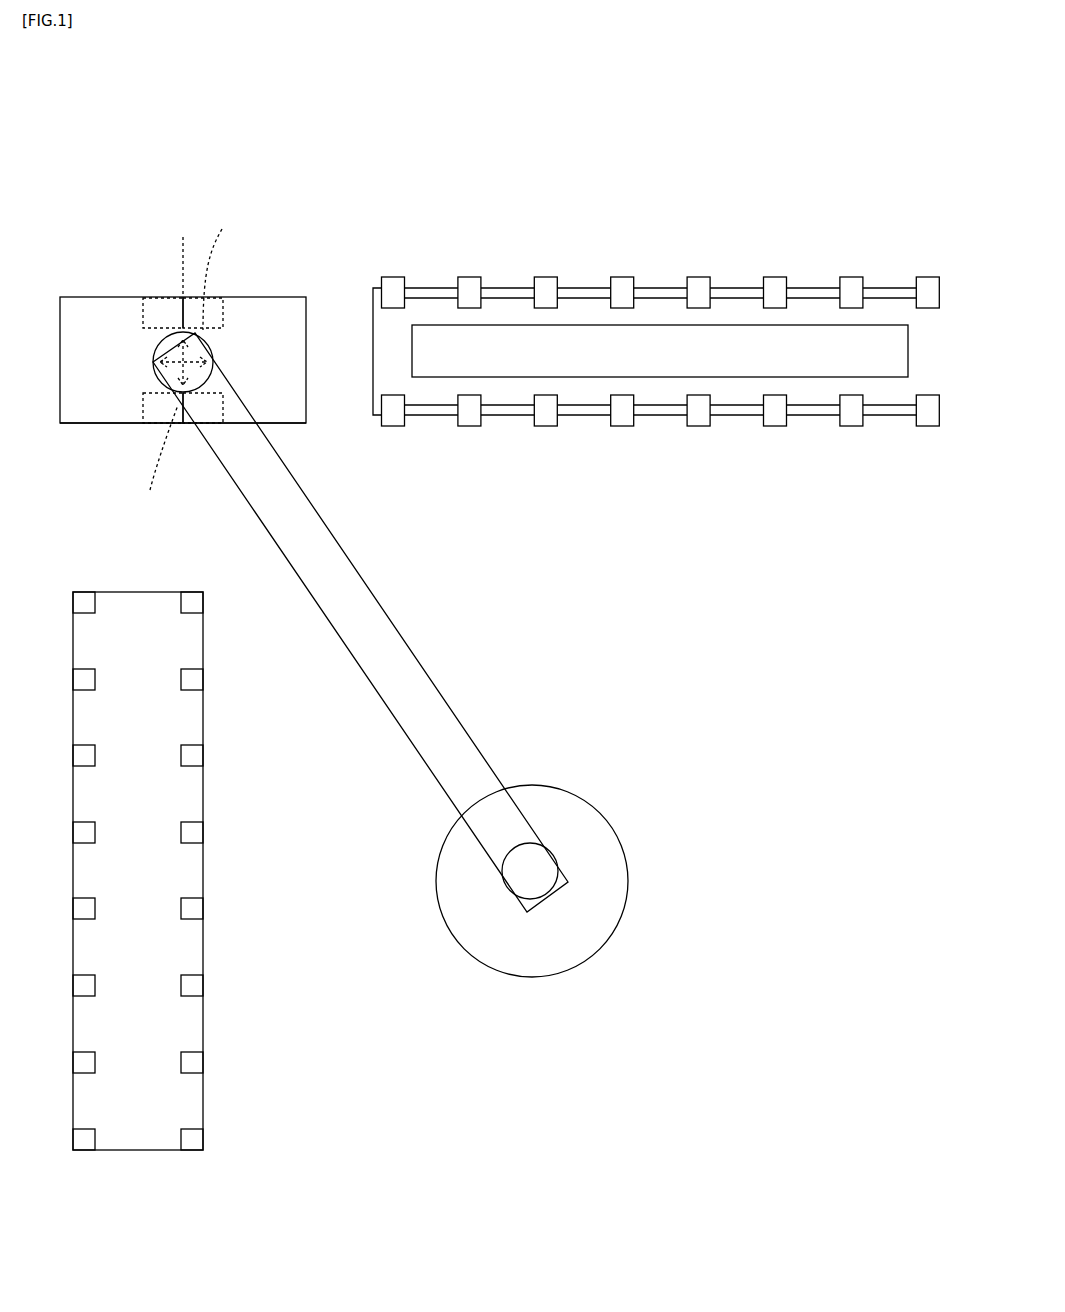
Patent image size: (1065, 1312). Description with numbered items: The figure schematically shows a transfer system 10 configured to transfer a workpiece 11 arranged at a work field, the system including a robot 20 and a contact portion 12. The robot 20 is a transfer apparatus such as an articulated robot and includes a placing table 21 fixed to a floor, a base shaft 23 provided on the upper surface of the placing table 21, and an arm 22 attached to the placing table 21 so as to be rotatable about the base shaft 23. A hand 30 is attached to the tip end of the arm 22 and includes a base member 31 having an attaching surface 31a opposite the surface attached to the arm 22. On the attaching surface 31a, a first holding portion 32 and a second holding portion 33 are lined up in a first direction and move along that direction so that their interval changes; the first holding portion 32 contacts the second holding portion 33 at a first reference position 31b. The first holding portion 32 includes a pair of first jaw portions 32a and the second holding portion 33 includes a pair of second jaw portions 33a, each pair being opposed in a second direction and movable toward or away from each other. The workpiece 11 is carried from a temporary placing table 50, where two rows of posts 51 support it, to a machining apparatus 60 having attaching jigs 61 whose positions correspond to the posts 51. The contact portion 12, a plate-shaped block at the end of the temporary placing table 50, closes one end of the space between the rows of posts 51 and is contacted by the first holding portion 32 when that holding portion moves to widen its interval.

The transfer system 10 is at (520, 128).
The workpiece 11 is at (837, 340).
The contact portion 12 is at (371, 287).
The robot 20 is at (592, 790).
The placing table 21 is at (595, 870).
The arm 22 is at (400, 697).
The base shaft 23 is at (510, 888).
The hand 30 is at (75, 297).
The base member 31 is at (308, 420).
The attaching surface 31a is at (95, 428).
The first reference position 31b is at (183, 237).
The first holding portion 32 is at (220, 410).
The first jaw portions 32a is at (213, 308).
The second holding portion 33 is at (177, 403).
The second jaw portions 33a is at (160, 308).
The temporary placing table 50 is at (663, 275).
The posts 51 is at (547, 285).
The machining apparatus 60 is at (222, 1020).
The attaching jigs 61 is at (90, 598).